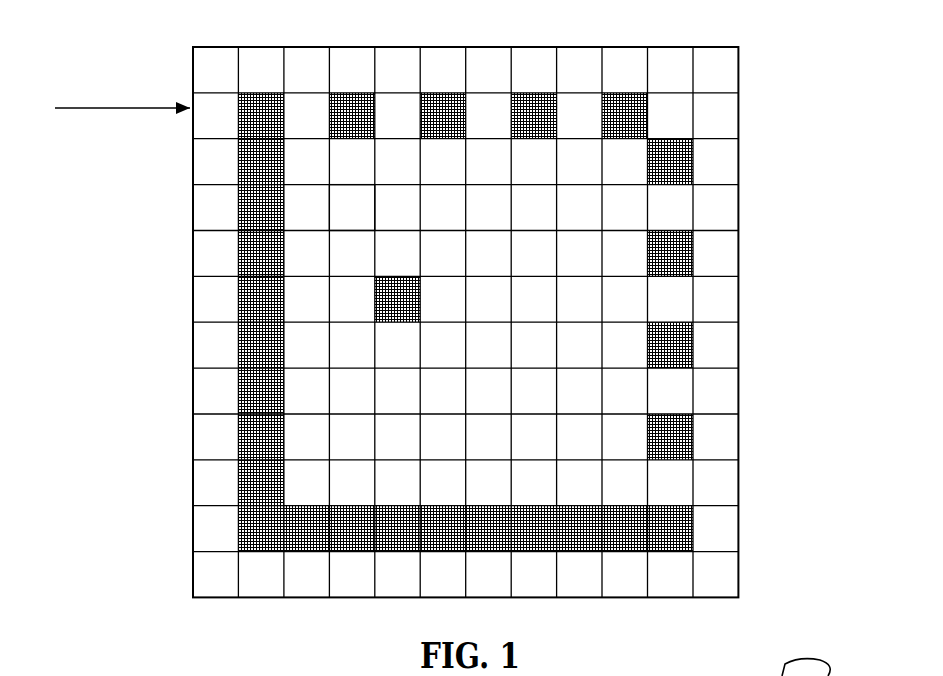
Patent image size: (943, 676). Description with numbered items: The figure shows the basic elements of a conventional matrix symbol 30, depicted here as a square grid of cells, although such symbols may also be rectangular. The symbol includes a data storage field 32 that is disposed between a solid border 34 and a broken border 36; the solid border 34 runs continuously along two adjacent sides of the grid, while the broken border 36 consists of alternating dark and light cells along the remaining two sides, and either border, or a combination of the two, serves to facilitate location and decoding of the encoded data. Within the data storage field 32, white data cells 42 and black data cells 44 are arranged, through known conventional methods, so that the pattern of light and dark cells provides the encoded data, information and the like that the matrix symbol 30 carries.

The matrix symbol 30 is at (775, 52).
The data storage field 32 is at (313, 368).
The solid border 34 is at (297, 535).
The broken border 36 is at (651, 109).
The white data cell 42 is at (343, 200).
The black data cell 44 is at (372, 277).